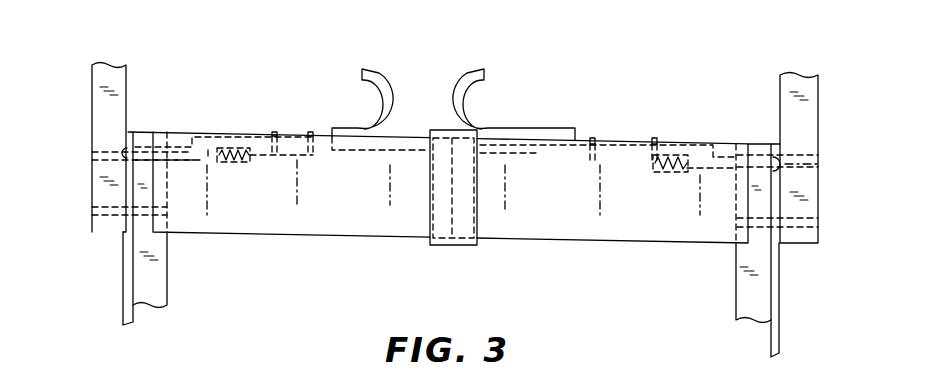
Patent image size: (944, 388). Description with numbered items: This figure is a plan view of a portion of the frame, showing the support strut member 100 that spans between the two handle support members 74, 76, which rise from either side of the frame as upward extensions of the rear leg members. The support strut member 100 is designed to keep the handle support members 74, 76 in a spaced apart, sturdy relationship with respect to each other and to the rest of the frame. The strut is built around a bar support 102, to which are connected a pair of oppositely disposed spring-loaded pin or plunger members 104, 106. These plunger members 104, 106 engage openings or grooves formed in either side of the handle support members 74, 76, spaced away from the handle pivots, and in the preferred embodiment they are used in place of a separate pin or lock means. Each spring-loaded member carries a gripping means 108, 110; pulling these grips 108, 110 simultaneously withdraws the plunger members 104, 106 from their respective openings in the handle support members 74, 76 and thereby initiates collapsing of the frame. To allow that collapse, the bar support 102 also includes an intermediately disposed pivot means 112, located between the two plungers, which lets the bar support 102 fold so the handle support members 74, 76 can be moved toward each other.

The handle support member 74 is at (805, 178).
The handle support member 76 is at (98, 168).
The support strut member 100 is at (272, 226).
The bar support 102 is at (590, 234).
The spring-loaded plunger member 104 is at (262, 130).
The spring-loaded plunger member 106 is at (675, 142).
The gripping means 108 is at (383, 82).
The gripping means 110 is at (475, 76).
The pivot means 112 is at (448, 244).